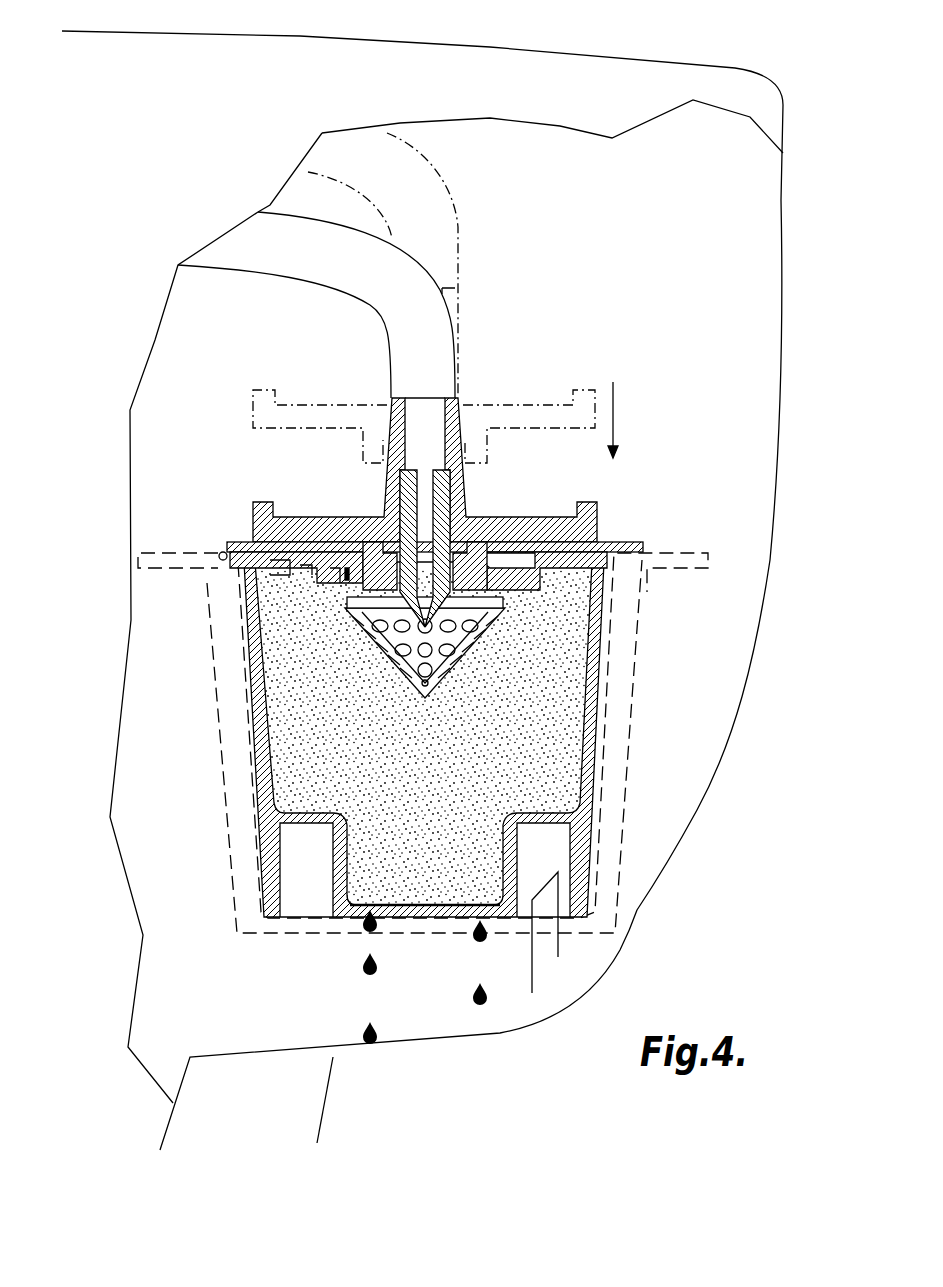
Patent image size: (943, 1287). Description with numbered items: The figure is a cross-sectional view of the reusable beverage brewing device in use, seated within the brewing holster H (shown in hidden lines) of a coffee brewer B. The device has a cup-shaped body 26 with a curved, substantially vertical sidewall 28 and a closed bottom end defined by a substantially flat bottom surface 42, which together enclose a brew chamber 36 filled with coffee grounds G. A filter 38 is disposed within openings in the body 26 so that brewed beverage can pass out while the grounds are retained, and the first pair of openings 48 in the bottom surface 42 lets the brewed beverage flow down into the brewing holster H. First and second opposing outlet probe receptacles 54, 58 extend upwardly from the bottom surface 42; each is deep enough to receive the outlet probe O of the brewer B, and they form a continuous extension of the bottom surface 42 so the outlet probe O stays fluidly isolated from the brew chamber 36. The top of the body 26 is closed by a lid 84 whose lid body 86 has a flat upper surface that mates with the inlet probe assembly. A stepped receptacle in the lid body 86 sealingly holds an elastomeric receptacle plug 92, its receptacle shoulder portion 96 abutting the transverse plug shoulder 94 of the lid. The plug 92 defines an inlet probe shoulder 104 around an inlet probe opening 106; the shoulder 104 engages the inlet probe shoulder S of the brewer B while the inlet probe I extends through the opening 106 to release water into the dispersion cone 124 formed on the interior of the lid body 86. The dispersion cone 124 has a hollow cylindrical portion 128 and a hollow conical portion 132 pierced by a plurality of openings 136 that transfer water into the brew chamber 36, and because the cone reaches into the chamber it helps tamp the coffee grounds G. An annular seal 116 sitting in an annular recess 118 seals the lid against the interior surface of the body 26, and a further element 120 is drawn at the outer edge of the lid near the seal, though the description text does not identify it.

The coffee brewer B is at (660, 67).
The brewing holster H is at (640, 592).
The coffee grounds G is at (575, 642).
The inlet probe I is at (450, 480).
The inlet probe shoulder S is at (380, 545).
The outlet probe O is at (540, 993).
The cup-shaped body 26 is at (597, 737).
The sidewall 28 is at (588, 666).
The brew chamber 36 is at (561, 772).
The filter 38 is at (398, 905).
The bottom surface 42 is at (430, 905).
The first pair of openings 48 is at (388, 912).
The first outlet probe receptacle 54 is at (311, 878).
The second outlet probe receptacle 58 is at (561, 843).
The lid 84 is at (642, 543).
The lid body 86 is at (240, 560).
The receptacle plug 92 is at (347, 552).
The plug shoulder 94 is at (306, 565).
The receptacle shoulder portion 96 is at (334, 568).
The inlet probe shoulder 104 is at (517, 540).
The inlet probe opening 106 is at (466, 577).
The annular seal 116 is at (245, 566).
The annular recess 118 is at (276, 560).
The O-ring 120 is at (222, 552).
The dispersion cone 124 is at (592, 694).
The hollow cylindrical portion 128 is at (347, 597).
The hollow conical portion 132 is at (395, 652).
The plurality of openings 136 is at (440, 670).